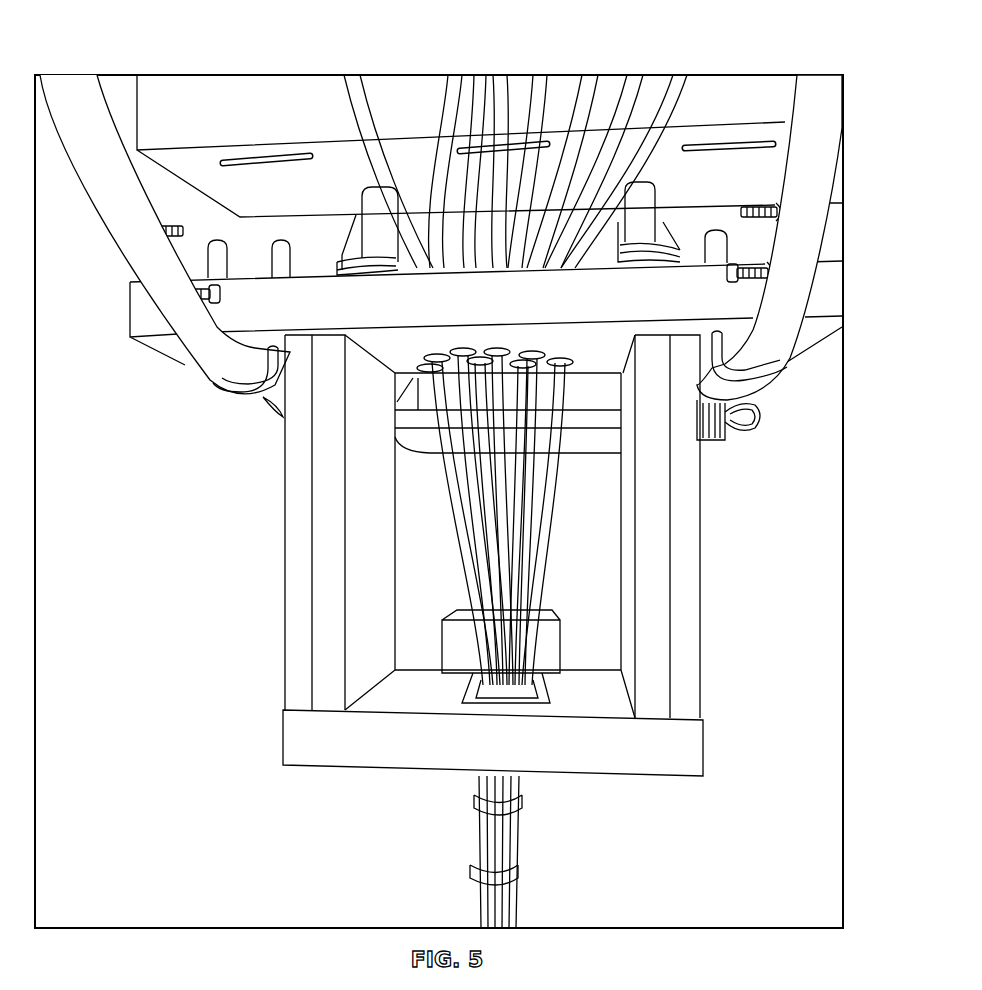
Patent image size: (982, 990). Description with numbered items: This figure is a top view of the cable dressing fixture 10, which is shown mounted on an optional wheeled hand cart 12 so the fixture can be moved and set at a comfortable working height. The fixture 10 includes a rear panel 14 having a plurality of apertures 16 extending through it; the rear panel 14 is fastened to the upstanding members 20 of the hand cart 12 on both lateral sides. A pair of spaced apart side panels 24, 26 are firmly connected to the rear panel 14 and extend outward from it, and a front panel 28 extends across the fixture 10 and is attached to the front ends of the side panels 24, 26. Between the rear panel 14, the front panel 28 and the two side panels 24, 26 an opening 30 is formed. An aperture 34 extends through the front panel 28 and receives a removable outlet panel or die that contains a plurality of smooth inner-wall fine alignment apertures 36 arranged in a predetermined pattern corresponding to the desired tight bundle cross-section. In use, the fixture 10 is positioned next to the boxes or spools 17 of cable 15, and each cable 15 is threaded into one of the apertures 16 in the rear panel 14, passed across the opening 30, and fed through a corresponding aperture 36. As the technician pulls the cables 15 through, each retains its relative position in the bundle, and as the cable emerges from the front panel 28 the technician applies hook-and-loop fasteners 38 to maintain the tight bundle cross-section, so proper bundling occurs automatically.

The cable dressing fixture 10 is at (555, 587).
The wheeled hand cart 12 is at (833, 250).
The rear panel 14 is at (823, 300).
The cables 15 is at (525, 532).
The apertures 16 is at (527, 355).
The boxes/spools of cable 17 is at (197, 125).
The upstanding members 20 is at (727, 392).
The side panel 24 is at (680, 582).
The side panel 26 is at (298, 565).
The front panel 28 is at (652, 777).
The opening 30 is at (495, 587).
The aperture 34 is at (463, 690).
The fine alignment apertures 36 is at (518, 693).
The hook-and-loop fasteners 38 is at (520, 878).